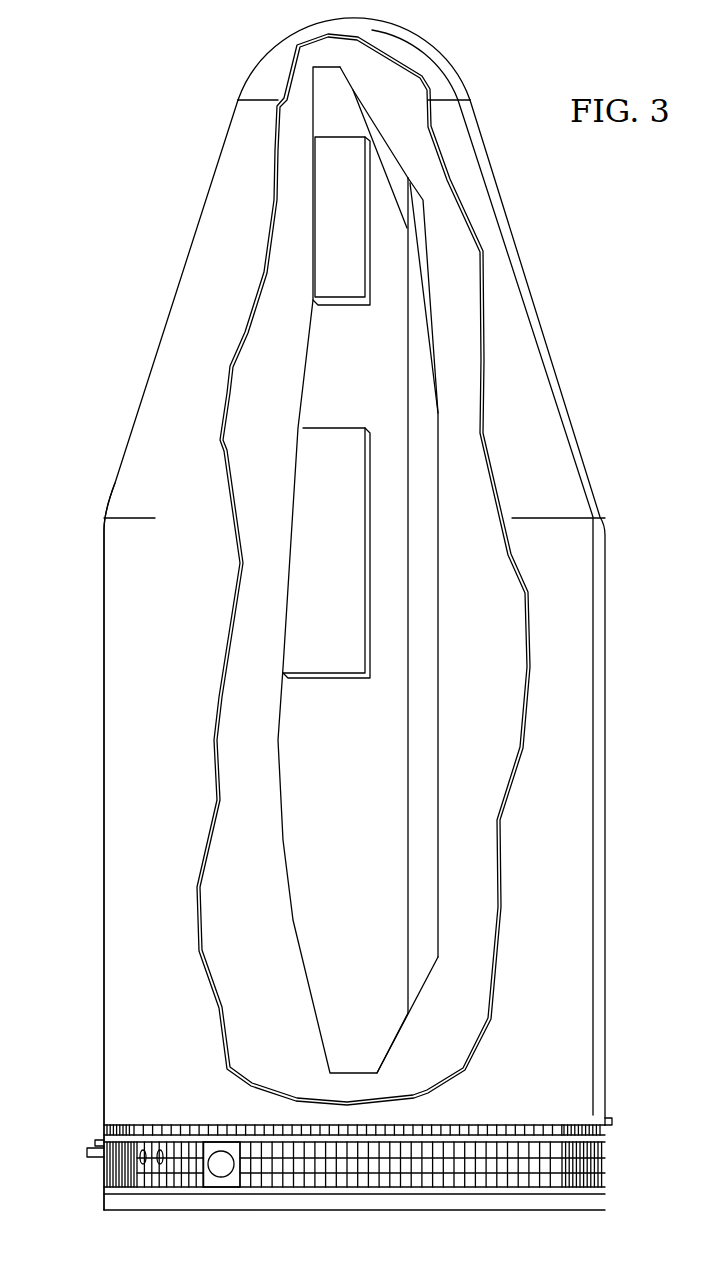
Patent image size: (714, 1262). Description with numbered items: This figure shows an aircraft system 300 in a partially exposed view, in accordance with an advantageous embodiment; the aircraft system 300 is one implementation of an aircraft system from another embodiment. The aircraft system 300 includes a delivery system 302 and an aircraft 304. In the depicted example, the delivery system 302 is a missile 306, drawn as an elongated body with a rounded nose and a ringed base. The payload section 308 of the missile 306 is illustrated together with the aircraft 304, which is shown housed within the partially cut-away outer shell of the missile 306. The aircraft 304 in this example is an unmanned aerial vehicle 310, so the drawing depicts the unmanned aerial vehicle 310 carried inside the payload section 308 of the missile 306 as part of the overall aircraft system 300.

The aircraft system 300 is at (168, 227).
The delivery system 302 is at (615, 871).
The aircraft 304 is at (363, 378).
The missile 306 is at (528, 280).
The payload section 308 is at (97, 690).
The unmanned aerial vehicle 310 is at (392, 432).